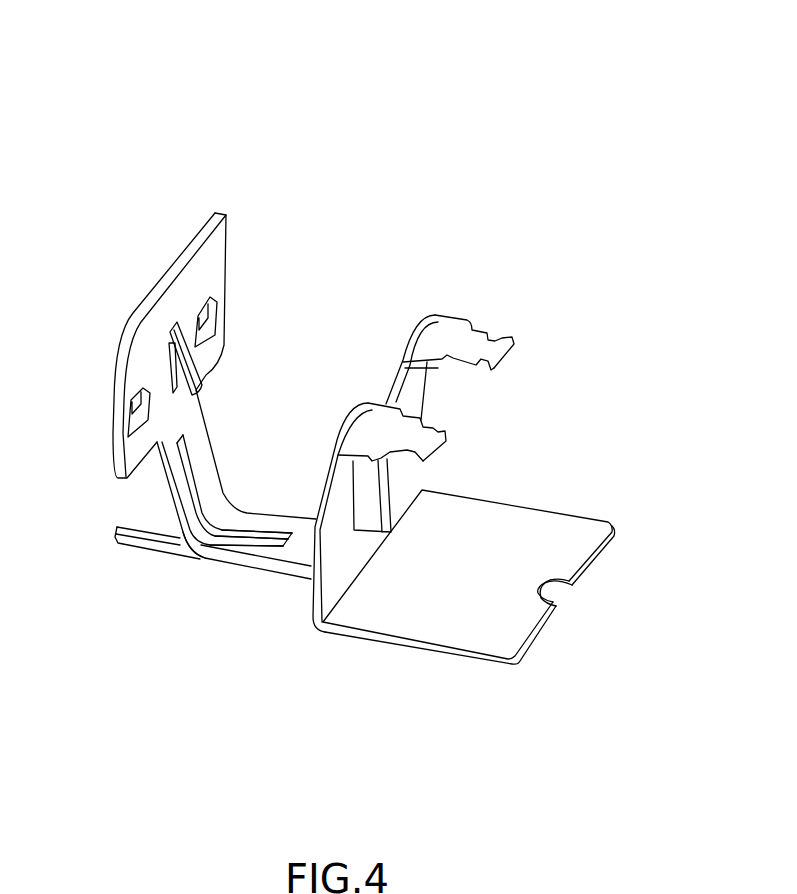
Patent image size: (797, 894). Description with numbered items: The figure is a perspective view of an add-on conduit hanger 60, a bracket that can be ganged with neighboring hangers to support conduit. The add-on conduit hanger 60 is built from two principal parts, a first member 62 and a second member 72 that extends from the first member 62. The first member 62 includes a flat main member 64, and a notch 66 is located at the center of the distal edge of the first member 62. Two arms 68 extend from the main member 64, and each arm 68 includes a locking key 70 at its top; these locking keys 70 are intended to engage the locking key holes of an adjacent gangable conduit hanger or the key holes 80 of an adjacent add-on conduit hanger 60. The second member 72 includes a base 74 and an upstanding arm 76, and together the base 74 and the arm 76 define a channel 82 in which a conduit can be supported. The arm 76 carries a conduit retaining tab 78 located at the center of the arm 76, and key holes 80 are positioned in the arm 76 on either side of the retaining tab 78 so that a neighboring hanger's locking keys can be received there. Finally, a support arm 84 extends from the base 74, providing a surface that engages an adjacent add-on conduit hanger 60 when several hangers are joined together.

The add-on conduit hanger 60 is at (158, 123).
The first member 62 is at (582, 517).
The main member 64 is at (523, 527).
The notch 66 is at (555, 595).
The arms 68 is at (337, 557).
The locking key 70 is at (500, 347).
The second member 72 is at (197, 557).
The base 74 is at (260, 557).
The arm 76 is at (168, 418).
The conduit retaining tab 78 is at (193, 372).
The key holes 80 is at (130, 420).
The channel 82 is at (213, 540).
The support arm 84 is at (133, 533).